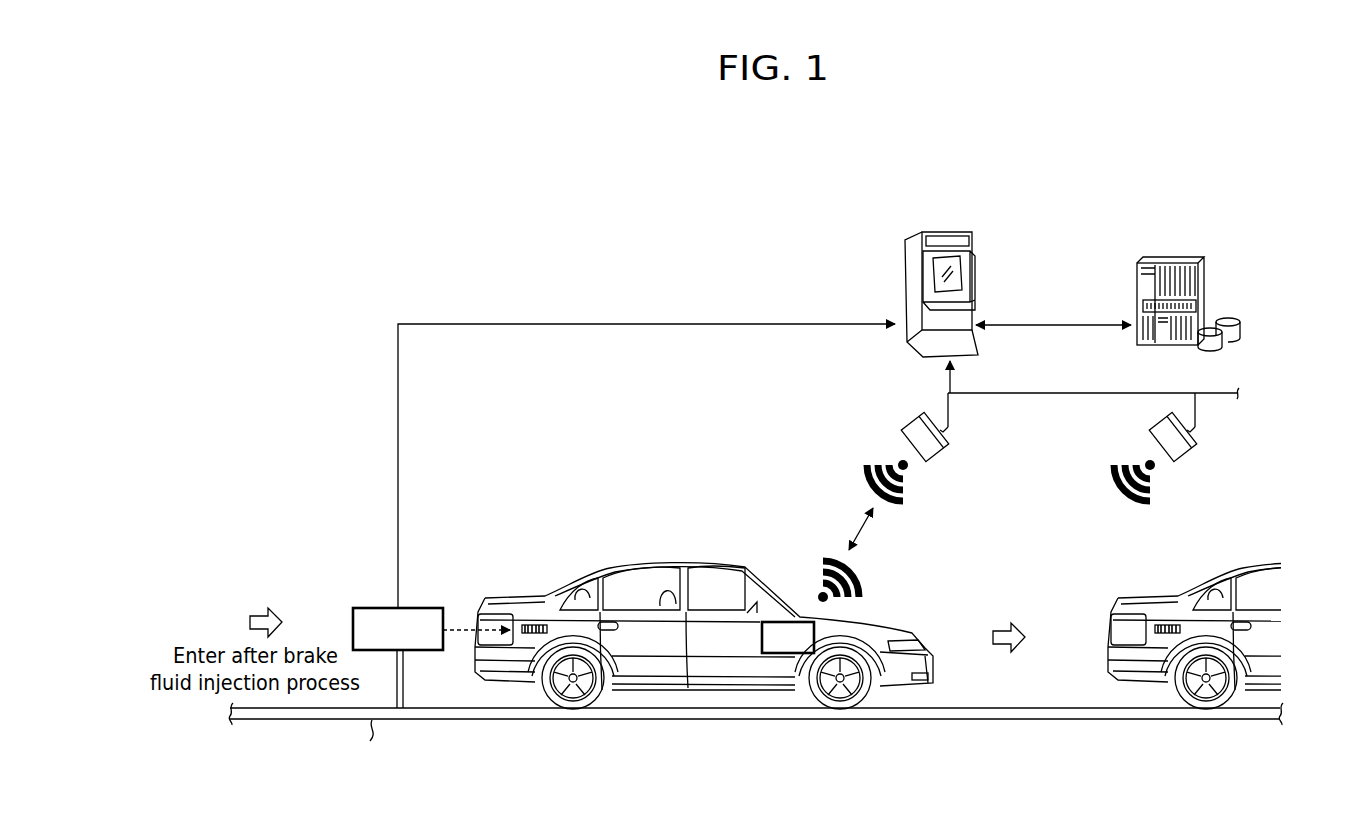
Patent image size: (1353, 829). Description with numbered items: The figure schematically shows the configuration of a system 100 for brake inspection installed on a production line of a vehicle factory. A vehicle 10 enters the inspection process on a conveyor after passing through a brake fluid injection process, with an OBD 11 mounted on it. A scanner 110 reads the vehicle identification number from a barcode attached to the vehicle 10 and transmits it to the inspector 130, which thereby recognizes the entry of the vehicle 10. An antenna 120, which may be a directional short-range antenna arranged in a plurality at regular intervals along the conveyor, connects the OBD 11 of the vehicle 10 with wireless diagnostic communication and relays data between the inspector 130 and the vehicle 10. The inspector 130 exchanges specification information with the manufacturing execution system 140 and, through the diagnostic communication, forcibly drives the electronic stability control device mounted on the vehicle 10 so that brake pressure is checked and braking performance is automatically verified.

The system for brake inspection 100 is at (613, 403).
The vehicle 10 is at (629, 557).
The OBD (On-Board Diagnostics) 11 is at (777, 621).
The scanner 110 is at (375, 607).
The antenna 120 is at (912, 416).
The inspector 130 is at (953, 232).
The manufacturing execution system (MES) 140 is at (1170, 258).